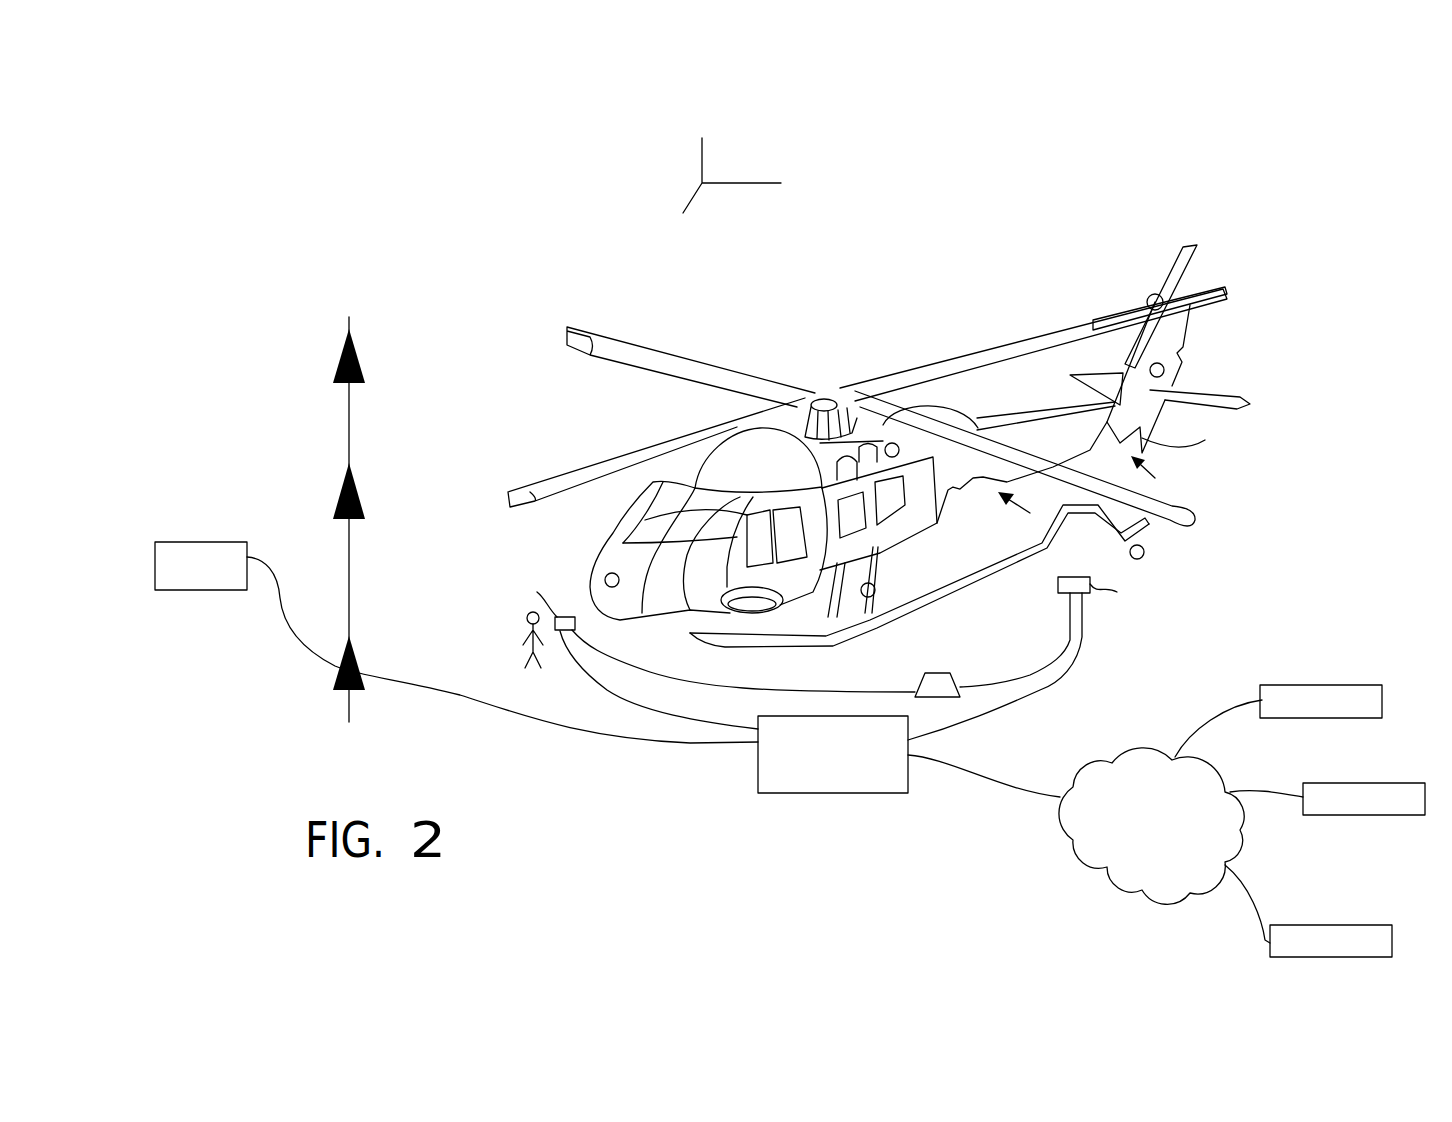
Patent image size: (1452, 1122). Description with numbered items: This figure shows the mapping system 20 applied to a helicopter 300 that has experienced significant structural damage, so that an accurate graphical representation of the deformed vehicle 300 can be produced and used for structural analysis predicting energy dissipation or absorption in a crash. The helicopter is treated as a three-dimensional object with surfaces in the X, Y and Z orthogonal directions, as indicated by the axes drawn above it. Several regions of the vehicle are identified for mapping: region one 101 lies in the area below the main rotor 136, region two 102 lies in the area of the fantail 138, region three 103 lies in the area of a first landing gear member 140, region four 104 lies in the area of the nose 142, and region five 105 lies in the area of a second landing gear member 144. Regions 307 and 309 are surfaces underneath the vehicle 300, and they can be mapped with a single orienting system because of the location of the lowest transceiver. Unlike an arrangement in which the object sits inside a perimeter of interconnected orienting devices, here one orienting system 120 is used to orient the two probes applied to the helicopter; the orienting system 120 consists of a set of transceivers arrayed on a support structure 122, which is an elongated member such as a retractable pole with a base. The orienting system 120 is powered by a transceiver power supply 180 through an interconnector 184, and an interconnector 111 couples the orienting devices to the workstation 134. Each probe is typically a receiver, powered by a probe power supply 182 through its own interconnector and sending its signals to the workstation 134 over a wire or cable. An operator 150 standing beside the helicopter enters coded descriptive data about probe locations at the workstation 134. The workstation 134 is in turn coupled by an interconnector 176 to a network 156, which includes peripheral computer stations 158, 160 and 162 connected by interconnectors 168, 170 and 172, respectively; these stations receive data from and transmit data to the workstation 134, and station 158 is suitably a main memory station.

The system 20 is at (496, 86).
The helicopter 300 is at (835, 312).
The main rotor 136 is at (862, 398).
The first region 101 is at (899, 444).
The fantail 138 is at (1173, 343).
The second region 102 is at (1165, 370).
The second landing gear member 144 is at (1203, 437).
The region 309 is at (1161, 475).
The region 307 is at (1017, 515).
The fifth region 105 is at (1145, 553).
The third region 103 is at (875, 590).
The first landing gear member 140 is at (850, 598).
The nose 142 is at (592, 588).
The fourth region 104 is at (604, 579).
The operator 150 is at (524, 622).
The probe power supply 182 is at (952, 677).
The interconnector 111 is at (567, 732).
The workstation 134 is at (818, 757).
The interconnector 176 is at (975, 765).
The network 156 is at (1137, 820).
The interconnector 172 is at (1214, 720).
The interconnector 170 is at (1256, 793).
The interconnector 168 is at (1250, 890).
The peripheral computer station 162 is at (1328, 685).
The peripheral computer station 160 is at (1360, 783).
The peripheral computer station 158 is at (1332, 925).
The first orienting system 120 is at (276, 406).
The support structure 122 is at (349, 437).
The transceiver power supply 180 is at (198, 590).
The interconnector 184 is at (279, 598).